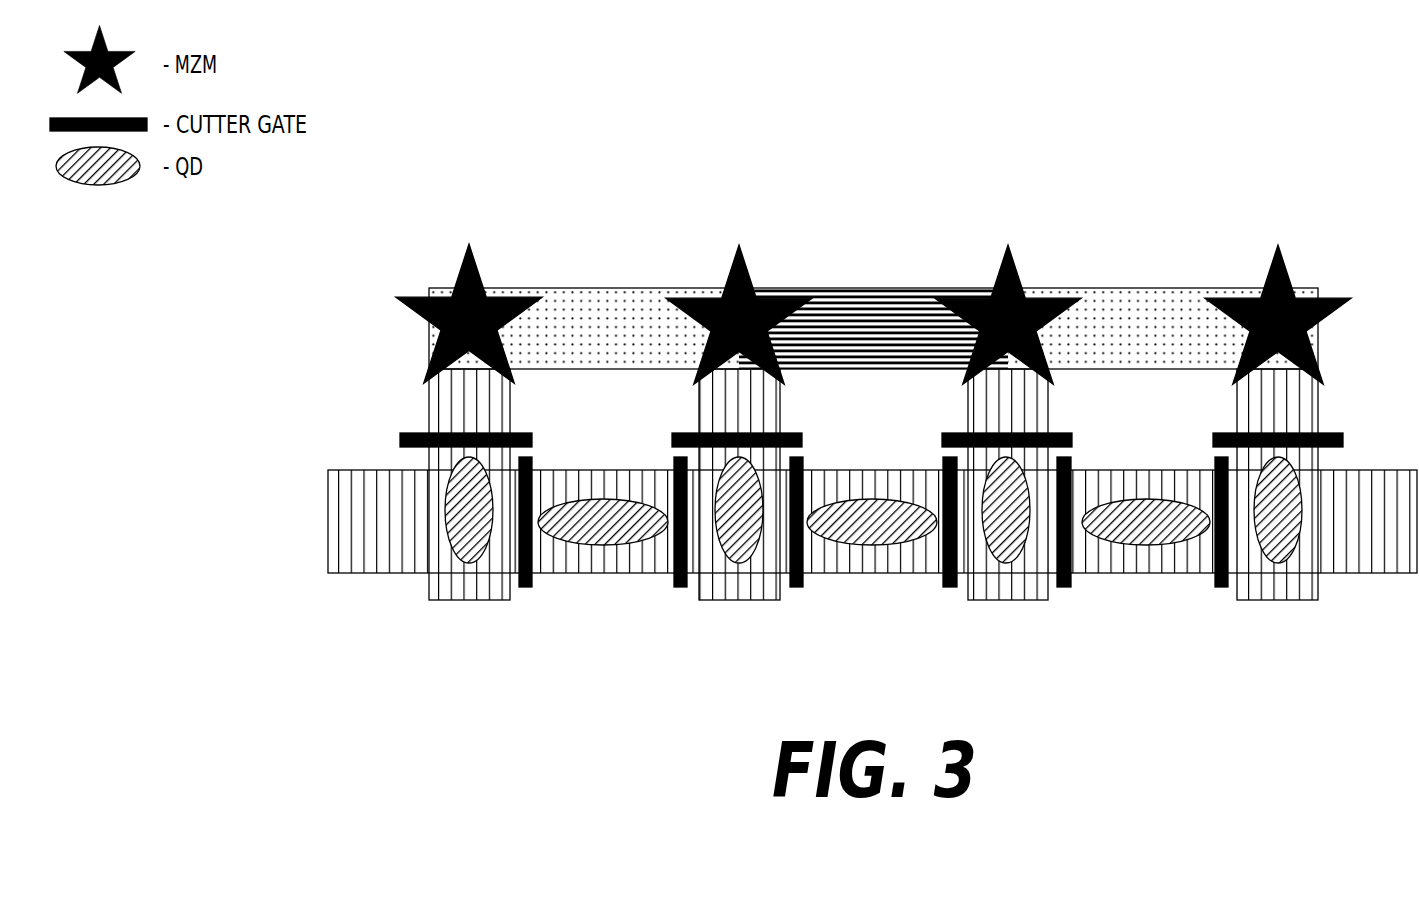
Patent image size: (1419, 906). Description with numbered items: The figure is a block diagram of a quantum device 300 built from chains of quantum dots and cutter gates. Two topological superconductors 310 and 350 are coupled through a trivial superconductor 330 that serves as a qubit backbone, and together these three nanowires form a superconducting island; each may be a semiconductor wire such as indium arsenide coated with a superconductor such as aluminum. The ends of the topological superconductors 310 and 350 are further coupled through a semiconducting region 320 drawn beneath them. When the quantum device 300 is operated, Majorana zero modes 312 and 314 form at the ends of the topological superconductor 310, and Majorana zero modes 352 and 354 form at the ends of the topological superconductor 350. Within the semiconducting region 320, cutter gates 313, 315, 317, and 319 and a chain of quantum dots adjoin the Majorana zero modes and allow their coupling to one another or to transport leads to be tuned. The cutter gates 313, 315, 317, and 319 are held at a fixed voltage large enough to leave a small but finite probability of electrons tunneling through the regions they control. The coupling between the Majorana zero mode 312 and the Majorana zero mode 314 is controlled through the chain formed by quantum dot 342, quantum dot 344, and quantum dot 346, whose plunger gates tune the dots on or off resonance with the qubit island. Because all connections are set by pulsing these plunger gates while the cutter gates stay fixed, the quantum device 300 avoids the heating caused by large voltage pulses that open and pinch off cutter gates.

The quantum device 300 is at (872, 443).
The topological superconductor 310 is at (619, 343).
The Majorana zero mode 312 is at (469, 244).
The cutter gate 313 is at (533, 440).
The Majorana zero mode 314 is at (739, 245).
The cutter gate 315 is at (526, 588).
The cutter gate 317 is at (681, 588).
The cutter gate 319 is at (803, 440).
The semiconducting region 320 is at (394, 536).
The trivial superconductor 330 is at (889, 343).
The quantum dot 342 is at (470, 563).
The quantum dot 344 is at (600, 545).
The quantum dot 346 is at (738, 563).
The topological superconductor 350 is at (1157, 343).
The Majorana zero mode 352 is at (1008, 245).
The Majorana zero mode 354 is at (1278, 245).